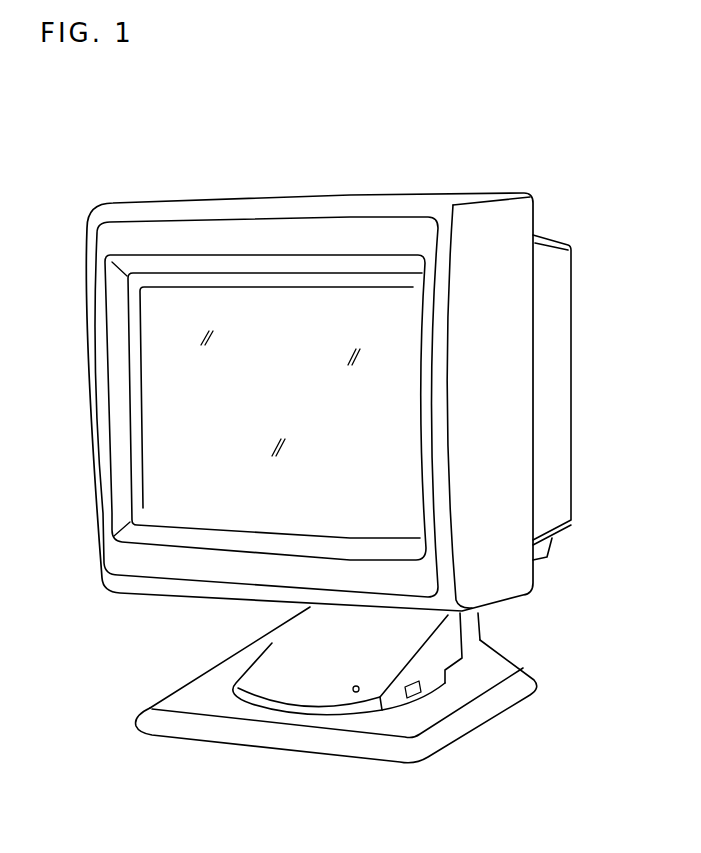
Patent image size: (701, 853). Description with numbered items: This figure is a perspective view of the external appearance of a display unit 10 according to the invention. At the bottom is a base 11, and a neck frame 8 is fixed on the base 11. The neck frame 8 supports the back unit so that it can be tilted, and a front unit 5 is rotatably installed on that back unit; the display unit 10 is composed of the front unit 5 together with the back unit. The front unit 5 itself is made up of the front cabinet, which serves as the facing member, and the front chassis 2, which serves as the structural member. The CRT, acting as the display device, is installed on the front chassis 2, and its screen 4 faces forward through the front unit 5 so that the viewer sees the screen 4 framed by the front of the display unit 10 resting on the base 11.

The display unit 10 is at (297, 183).
The front unit 5 is at (382, 195).
The front chassis 2 is at (562, 283).
The screen 4 is at (150, 347).
The neck frame 8 is at (470, 628).
The base 11 is at (477, 717).